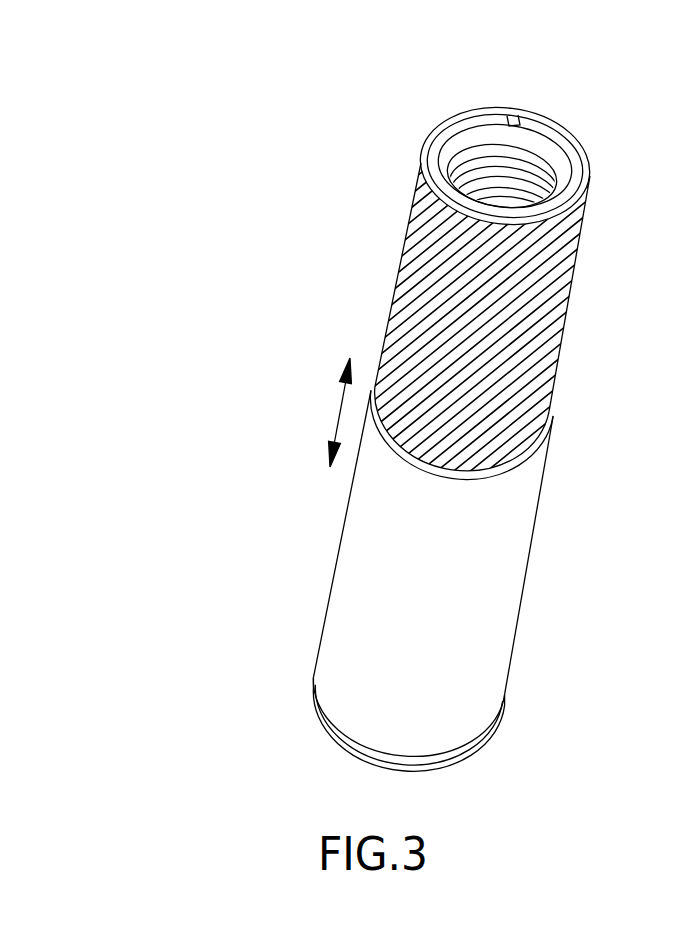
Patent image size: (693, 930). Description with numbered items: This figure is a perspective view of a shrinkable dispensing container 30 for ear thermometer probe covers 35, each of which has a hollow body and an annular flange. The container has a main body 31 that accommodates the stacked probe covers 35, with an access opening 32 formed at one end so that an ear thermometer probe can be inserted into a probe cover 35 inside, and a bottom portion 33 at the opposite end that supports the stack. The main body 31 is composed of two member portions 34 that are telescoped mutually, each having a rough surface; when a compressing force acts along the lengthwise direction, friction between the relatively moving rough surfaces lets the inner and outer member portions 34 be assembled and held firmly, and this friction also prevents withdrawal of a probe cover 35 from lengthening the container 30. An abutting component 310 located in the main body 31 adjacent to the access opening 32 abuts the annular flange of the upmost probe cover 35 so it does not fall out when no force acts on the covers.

The shrinkable dispensing container 30 is at (78, 53).
The main body 31 is at (393, 220).
The access opening 32 is at (442, 132).
The abutting component 310 is at (512, 114).
The bottom portion 33 is at (335, 727).
The member portion 34 is at (415, 285).
The probe cover 35 is at (535, 143).